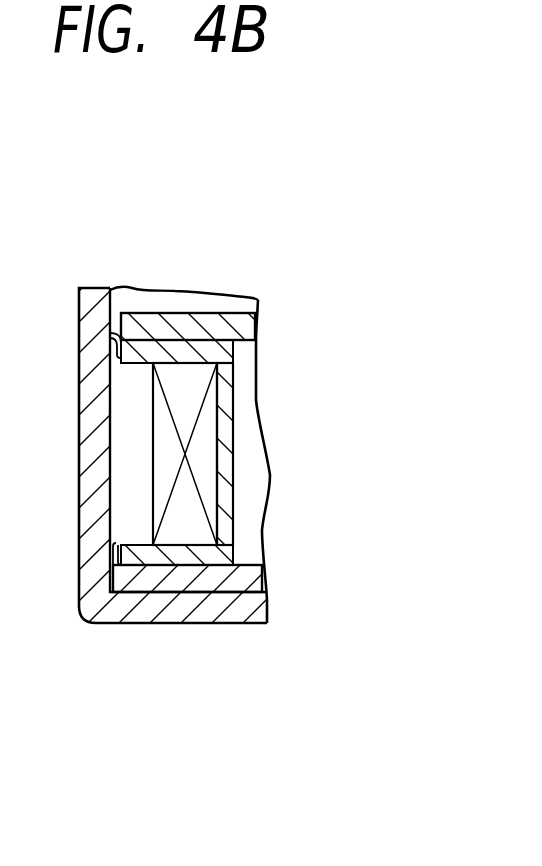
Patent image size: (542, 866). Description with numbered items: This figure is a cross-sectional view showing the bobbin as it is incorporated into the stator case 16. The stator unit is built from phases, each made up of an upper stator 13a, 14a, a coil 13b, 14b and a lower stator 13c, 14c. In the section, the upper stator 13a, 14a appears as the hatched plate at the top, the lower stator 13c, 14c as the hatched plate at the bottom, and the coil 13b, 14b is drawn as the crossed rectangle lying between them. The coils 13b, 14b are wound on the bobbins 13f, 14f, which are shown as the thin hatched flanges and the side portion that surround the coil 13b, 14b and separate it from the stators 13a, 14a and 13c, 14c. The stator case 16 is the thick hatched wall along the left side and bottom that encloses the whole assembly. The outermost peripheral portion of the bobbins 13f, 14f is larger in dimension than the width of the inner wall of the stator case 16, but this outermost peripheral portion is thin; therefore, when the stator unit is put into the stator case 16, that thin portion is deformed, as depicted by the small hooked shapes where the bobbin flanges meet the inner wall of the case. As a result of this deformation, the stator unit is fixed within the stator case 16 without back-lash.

The upper stator 13a is at (186, 286).
The upper stator 14a is at (176, 322).
The coil 13b is at (263, 454).
The coil 14b is at (187, 495).
The lower stator 13c is at (187, 623).
The lower stator 14c is at (166, 578).
The bobbin 13f is at (289, 454).
The bobbin 14f is at (237, 417).
The stator case 16 is at (92, 437).